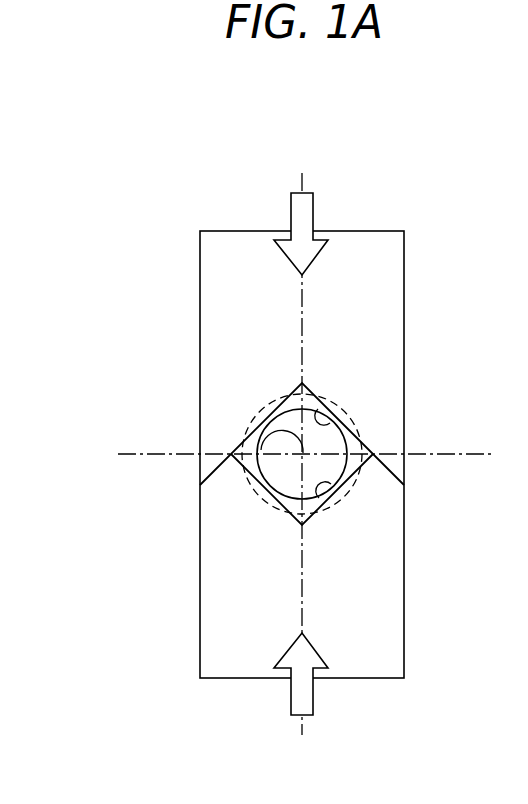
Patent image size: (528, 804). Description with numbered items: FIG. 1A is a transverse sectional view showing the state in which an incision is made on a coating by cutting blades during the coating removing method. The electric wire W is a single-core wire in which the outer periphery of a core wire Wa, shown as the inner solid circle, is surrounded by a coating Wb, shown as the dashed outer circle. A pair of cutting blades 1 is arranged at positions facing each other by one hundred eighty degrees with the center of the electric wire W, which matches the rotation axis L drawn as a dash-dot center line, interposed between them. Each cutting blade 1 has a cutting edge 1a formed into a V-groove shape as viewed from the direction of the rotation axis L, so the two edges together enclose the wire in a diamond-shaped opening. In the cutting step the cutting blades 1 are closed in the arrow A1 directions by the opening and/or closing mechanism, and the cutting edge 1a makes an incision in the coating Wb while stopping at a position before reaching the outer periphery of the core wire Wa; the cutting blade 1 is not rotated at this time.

The cutting blade 1 is at (244, 337).
The cutting edge 1a is at (350, 420).
The arrow direction A1 is at (314, 454).
The rotation axis L is at (257, 410).
The electric wire W is at (209, 515).
The core wire Wa is at (284, 476).
The coating Wb is at (248, 461).